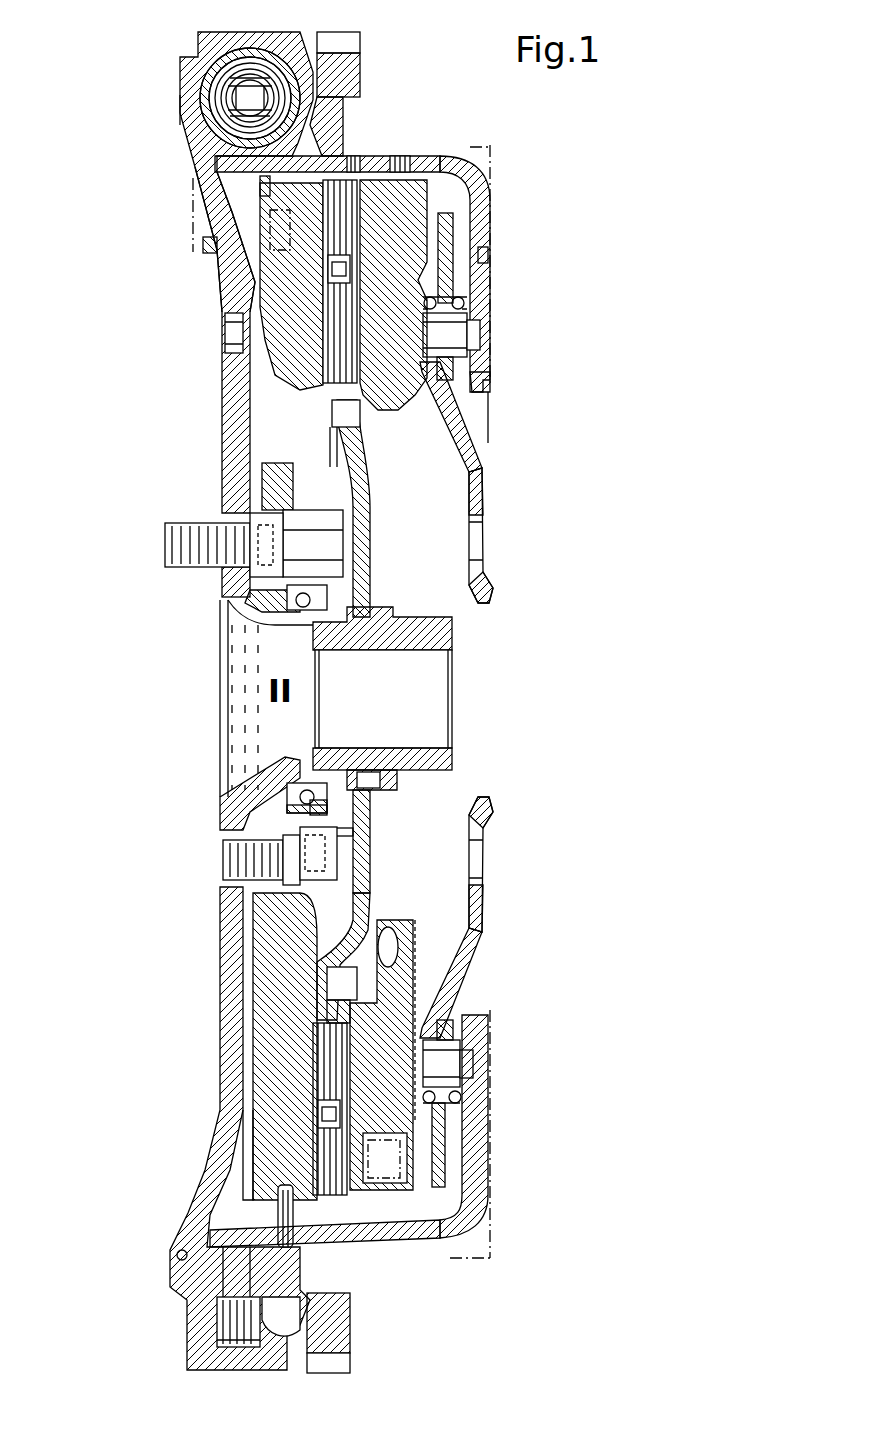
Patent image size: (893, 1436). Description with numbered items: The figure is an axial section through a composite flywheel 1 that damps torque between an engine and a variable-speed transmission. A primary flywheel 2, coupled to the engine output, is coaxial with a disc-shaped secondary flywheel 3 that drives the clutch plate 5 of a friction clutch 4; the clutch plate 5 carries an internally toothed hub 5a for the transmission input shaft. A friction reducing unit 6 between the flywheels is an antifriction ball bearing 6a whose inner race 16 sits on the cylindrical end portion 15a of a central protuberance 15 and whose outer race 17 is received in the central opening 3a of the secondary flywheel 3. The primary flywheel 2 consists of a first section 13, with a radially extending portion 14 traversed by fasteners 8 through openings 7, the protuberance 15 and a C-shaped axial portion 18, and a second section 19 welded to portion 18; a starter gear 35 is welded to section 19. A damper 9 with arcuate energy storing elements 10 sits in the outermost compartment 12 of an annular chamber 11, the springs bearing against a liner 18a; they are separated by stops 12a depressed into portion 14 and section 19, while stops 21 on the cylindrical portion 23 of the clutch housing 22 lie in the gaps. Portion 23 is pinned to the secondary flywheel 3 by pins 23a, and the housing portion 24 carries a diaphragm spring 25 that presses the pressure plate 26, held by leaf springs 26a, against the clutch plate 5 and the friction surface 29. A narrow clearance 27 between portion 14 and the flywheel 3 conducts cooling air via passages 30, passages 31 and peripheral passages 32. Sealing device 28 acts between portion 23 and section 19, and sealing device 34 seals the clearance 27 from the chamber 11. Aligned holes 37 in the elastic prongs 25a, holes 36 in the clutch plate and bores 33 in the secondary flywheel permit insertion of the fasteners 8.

The composite flywheel 1 is at (95, 84).
The primary flywheel 2 is at (235, 395).
The secondary flywheel 3 is at (280, 240).
The central circular opening 3a is at (337, 833).
The friction clutch 4 is at (445, 1112).
The clutch plate 5 is at (372, 912).
The hub 5a is at (397, 632).
The friction reducing unit 6 is at (297, 763).
The antifriction ball bearing 6a is at (260, 617).
The openings 7 is at (222, 517).
The fasteners 8 is at (240, 858).
The damper 9 is at (193, 108).
The energy storing elements 10 is at (297, 43).
The annular chamber 11 is at (280, 178).
The compartment 12 is at (293, 132).
The abutments or stops 12a is at (322, 1310).
The first section 13 is at (222, 280).
The radially extending portion 14 is at (232, 1053).
The protuberance 15 is at (257, 793).
The cylindrical end portion 15a is at (330, 763).
The inner race 16 is at (390, 780).
The outer race 17 is at (323, 807).
The axially extending radially outermost portion 18 is at (200, 47).
The internal liner 18a is at (243, 45).
The second section 19 is at (263, 110).
The stops 21 is at (240, 1283).
The clutch housing 22 is at (470, 1203).
The cylindrical portion 23 is at (350, 1237).
The pins 23a is at (282, 1207).
The radially inwardly extending portion 24 is at (480, 305).
The diaphragm spring 25 is at (457, 203).
The elastic prongs 25a is at (483, 478).
The pressure plate 26 is at (387, 260).
The leaf springs 26a is at (475, 390).
The radially extending clearance 27 is at (248, 975).
The sealing device 28 is at (345, 150).
The annular friction surface 29 is at (323, 302).
The passages 30 is at (293, 415).
The passages 31 is at (232, 340).
The passages 32 is at (290, 187).
The holes or bores 33 is at (315, 533).
The sealing device 34 is at (240, 1170).
The starter gear 35 is at (293, 1318).
The holes or bores 36 is at (363, 547).
The holes or bores 37 is at (480, 548).